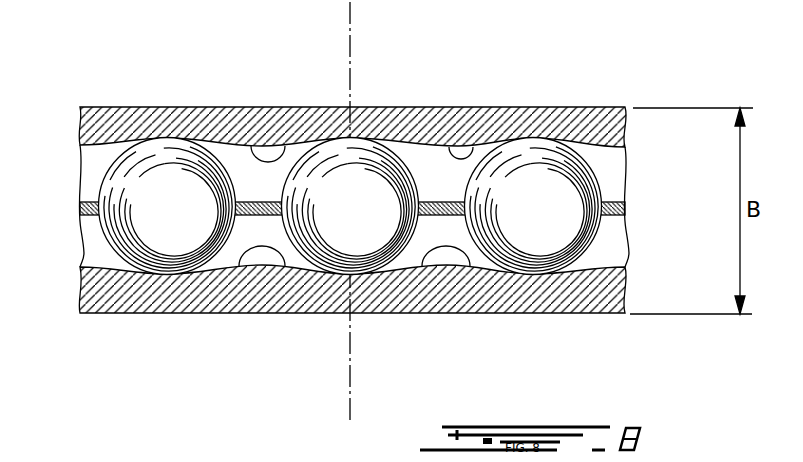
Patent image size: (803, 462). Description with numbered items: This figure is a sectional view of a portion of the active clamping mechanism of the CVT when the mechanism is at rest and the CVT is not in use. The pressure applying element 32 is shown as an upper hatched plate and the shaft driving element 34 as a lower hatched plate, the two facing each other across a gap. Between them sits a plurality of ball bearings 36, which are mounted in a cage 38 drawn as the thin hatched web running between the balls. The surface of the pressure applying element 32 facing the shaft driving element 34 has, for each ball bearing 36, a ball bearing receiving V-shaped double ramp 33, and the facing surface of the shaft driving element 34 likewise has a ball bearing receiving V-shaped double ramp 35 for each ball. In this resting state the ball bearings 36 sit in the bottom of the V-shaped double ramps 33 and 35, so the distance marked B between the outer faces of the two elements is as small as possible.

The pressure applying element 32 is at (105, 119).
The ball bearing receiving V-shaped double ramp 33 is at (254, 146).
The shaft driving element 34 is at (103, 290).
The ball bearing receiving V-shaped double ramp 35 is at (243, 270).
The ball bearing 36 is at (153, 214).
The cage 38 is at (82, 206).